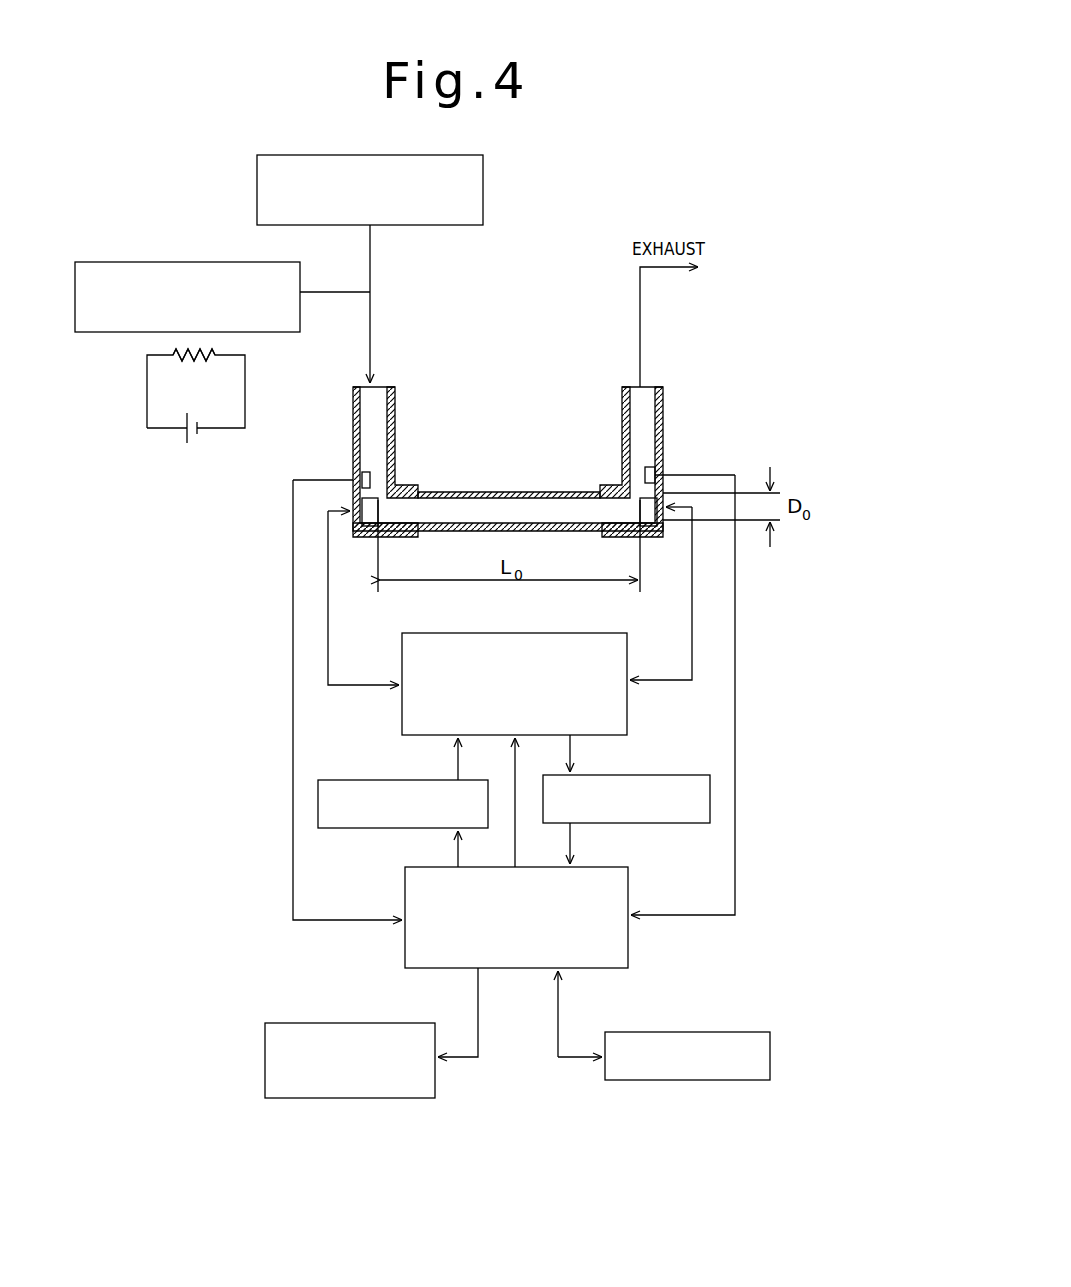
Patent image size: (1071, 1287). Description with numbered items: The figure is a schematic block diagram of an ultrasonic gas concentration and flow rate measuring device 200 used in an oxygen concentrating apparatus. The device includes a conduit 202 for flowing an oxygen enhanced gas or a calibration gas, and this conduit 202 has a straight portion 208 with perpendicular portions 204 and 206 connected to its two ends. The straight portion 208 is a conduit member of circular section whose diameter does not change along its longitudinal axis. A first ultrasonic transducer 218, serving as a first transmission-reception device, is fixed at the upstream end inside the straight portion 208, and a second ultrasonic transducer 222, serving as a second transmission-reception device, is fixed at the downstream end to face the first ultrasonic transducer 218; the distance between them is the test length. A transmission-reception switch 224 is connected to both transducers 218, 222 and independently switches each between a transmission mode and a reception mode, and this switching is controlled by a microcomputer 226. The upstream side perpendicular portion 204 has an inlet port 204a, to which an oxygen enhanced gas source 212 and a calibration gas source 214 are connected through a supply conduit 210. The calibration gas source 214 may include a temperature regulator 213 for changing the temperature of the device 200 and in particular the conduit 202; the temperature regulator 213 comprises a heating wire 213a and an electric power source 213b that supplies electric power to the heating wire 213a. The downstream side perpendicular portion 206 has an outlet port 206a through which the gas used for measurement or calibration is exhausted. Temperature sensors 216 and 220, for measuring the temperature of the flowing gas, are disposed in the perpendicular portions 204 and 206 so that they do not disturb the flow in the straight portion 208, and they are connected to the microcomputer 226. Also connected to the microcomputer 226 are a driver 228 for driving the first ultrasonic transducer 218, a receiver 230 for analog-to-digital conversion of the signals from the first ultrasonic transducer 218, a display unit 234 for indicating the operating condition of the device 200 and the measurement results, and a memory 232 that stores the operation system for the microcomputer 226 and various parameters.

The ultrasonic gas concentration and flow rate measuring device 200 is at (803, 250).
The conduit 202 is at (514, 468).
The upstream side perpendicular portion 204 is at (369, 439).
The inlet port 204a is at (358, 386).
The downstream side perpendicular portion 206 is at (648, 437).
The outlet port 206a is at (645, 386).
The straight portion 208 is at (512, 497).
The supply conduit 210 is at (372, 255).
The oxygen enhanced gas source 212 is at (485, 183).
The temperature regulator 213 is at (185, 433).
The heating wire 213a is at (205, 359).
The electric power source 213b is at (193, 444).
The calibration gas source 214 is at (188, 258).
The temperature sensor 216 is at (370, 480).
The first ultrasonic transducer 218 is at (370, 529).
The temperature sensor 220 is at (645, 474).
The second ultrasonic transducer 222 is at (649, 529).
The transmission-reception switch 224 is at (470, 633).
The microcomputer 226 is at (630, 947).
The driver 228 is at (353, 780).
The receiver 230 is at (675, 775).
The memory 232 is at (692, 1080).
The display unit 234 is at (357, 1098).